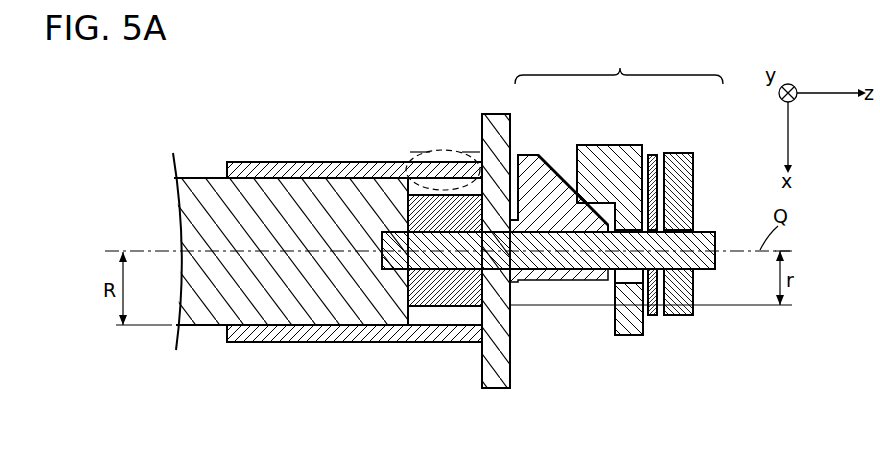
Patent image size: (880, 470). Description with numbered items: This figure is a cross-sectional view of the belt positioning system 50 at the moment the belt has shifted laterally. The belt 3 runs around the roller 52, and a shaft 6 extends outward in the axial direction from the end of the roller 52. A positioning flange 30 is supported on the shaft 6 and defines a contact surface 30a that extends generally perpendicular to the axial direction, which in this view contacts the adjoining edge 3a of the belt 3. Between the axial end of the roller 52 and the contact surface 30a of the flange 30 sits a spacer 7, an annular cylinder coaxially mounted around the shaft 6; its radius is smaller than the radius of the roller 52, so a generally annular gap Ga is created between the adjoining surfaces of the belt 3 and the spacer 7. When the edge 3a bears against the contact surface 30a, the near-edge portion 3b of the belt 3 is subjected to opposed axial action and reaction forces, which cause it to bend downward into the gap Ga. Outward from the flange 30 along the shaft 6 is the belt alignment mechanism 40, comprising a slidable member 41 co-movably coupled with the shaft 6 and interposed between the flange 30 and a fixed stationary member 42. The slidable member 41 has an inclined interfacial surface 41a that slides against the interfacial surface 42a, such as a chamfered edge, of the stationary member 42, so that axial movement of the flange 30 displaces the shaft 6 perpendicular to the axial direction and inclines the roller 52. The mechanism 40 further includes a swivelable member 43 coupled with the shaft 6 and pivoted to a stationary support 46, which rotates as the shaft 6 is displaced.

The belt 3 is at (285, 161).
The adjoining edge of the belt 3a is at (473, 148).
The near-edge portion of the belt 3b is at (420, 148).
The shaft 6 is at (715, 238).
The spacer 7 is at (445, 306).
The positioning flange 30 is at (507, 363).
The contact surface 30a is at (483, 155).
The belt alignment mechanism 40 is at (619, 65).
The slidable member 41 is at (520, 155).
The inclined interfacial surface 41a is at (556, 172).
The stationary member 42 is at (620, 145).
The interfacial surface of the stationary member 42a is at (577, 200).
The swivelable member 43 is at (684, 153).
The stationary support 46 is at (653, 155).
The belt positioning system 50 is at (400, 64).
The roller 52 is at (289, 302).
The gap Ga is at (404, 187).